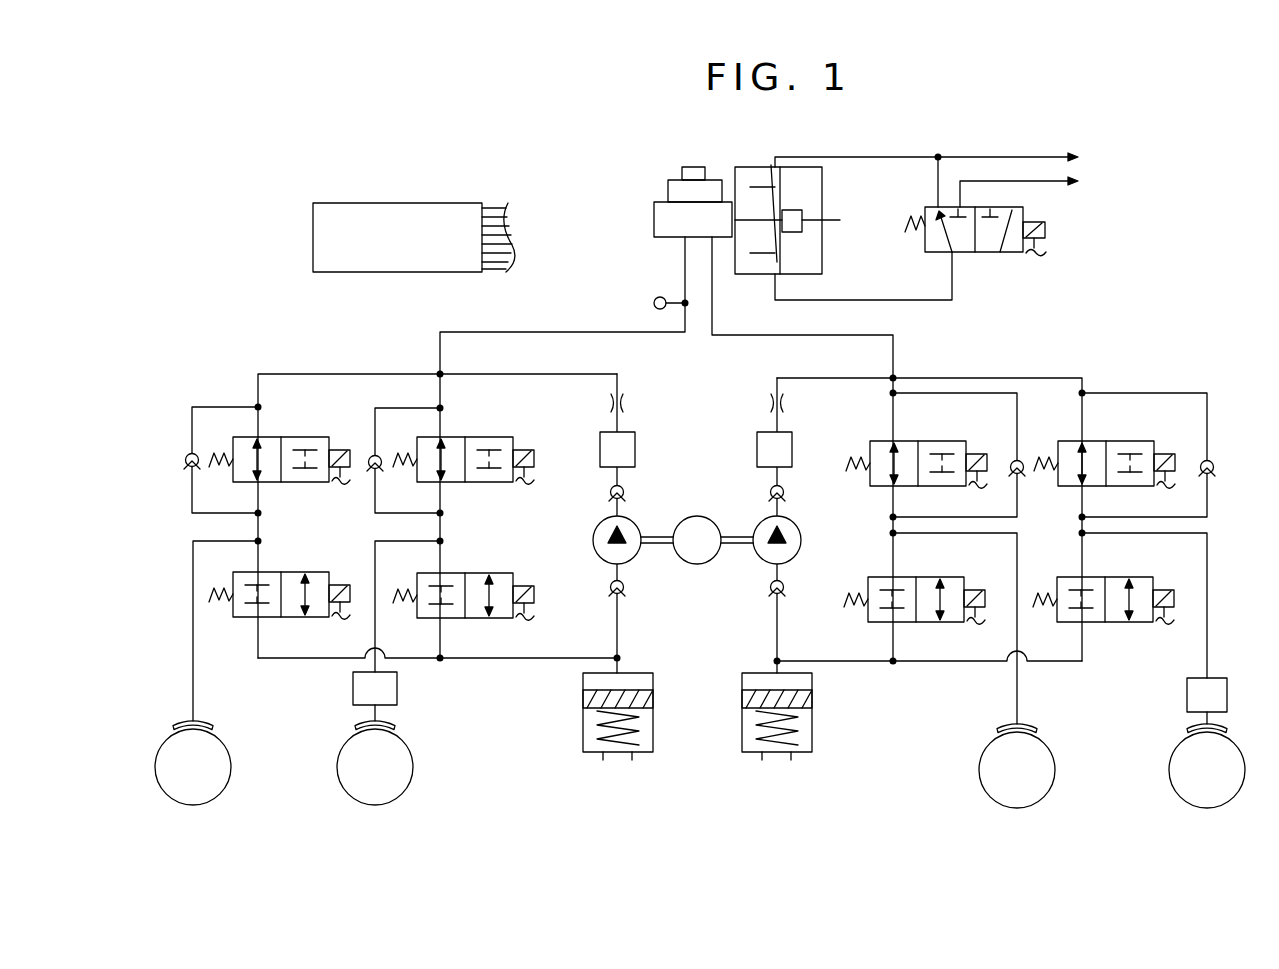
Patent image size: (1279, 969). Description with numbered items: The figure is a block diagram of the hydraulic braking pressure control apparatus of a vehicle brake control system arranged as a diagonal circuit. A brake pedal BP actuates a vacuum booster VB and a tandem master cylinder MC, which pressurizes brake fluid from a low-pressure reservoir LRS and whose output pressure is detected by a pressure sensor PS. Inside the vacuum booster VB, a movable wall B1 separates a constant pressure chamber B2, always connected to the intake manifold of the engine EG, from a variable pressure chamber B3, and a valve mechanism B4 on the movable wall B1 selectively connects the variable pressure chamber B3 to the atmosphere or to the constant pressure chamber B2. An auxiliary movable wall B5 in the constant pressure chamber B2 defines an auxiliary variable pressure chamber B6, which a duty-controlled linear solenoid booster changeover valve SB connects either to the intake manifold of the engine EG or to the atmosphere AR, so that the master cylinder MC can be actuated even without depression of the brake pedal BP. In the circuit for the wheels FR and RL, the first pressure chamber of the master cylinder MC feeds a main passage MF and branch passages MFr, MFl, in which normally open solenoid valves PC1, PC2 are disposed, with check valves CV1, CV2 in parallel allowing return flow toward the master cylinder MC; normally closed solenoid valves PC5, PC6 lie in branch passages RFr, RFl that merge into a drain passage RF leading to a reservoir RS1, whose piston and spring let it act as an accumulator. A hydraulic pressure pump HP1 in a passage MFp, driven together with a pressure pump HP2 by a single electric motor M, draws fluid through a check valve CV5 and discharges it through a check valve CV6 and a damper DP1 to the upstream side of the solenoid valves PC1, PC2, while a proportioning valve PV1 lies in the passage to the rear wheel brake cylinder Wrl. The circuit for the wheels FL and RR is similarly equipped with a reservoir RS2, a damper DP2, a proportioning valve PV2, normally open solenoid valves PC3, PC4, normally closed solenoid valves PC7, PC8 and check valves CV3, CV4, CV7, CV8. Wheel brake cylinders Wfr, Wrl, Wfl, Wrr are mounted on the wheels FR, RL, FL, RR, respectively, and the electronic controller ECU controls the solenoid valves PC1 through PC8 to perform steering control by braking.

The electronic controller ECU is at (414, 237).
The low-pressure reservoir LRS is at (668, 188).
The master cylinder MC is at (654, 218).
The pressure sensor PS is at (655, 300).
The vacuum booster VB is at (730, 172).
The movable wall B1 is at (790, 262).
The constant pressure chamber B2 is at (753, 175).
The variable pressure chamber B3 is at (818, 248).
The valve mechanism B4 is at (800, 212).
The auxiliary movable wall B5 is at (773, 168).
The auxiliary variable pressure chamber B6 is at (772, 245).
The brake pedal BP is at (838, 196).
The engine EG is at (941, 223).
The atmosphere AR is at (1033, 188).
The booster changeover valve SB is at (972, 252).
The main passage MF is at (440, 358).
The branch passage MFr is at (258, 396).
The branch passage MFl is at (440, 396).
The passage MFp is at (617, 388).
The check valve CV1 is at (194, 452).
The check valve CV2 is at (378, 454).
The check valve CV3 is at (1014, 460).
The check valve CV4 is at (1203, 460).
The check valve CV5 is at (625, 585).
The check valve CV6 is at (625, 490).
The check valve CV7 is at (770, 585).
The check valve CV8 is at (770, 490).
The solenoid valve PC1 is at (283, 437).
The solenoid valve PC2 is at (468, 437).
The solenoid valve PC3 is at (918, 441).
The solenoid valve PC4 is at (1105, 441).
The solenoid valve PC5 is at (283, 572).
The solenoid valve PC6 is at (468, 573).
The solenoid valve PC7 is at (918, 577).
The solenoid valve PC8 is at (1105, 577).
The damper DP1 is at (635, 448).
The damper DP2 is at (757, 448).
The hydraulic pressure pump HP1 is at (634, 522).
The pressure pump HP2 is at (760, 522).
The electric motor M is at (697, 540).
The branch passage RFl is at (441, 646).
The branch passage RFr is at (300, 664).
The drain passage RF is at (470, 664).
The proportioning valve PV1 is at (397, 690).
The proportioning valve PV2 is at (1187, 696).
The reservoir RS1 is at (583, 693).
The reservoir RS2 is at (810, 694).
The wheel brake cylinder Wfr is at (178, 723).
The wheel brake cylinder Wrl is at (360, 723).
The wheel brake cylinder Wfl is at (1032, 731).
The wheel brake cylinder Wrr is at (1222, 731).
The front right wheel FR is at (193, 763).
The rear left wheel RL is at (375, 763).
The front left wheel FL is at (1017, 766).
The rear right wheel RR is at (1207, 766).